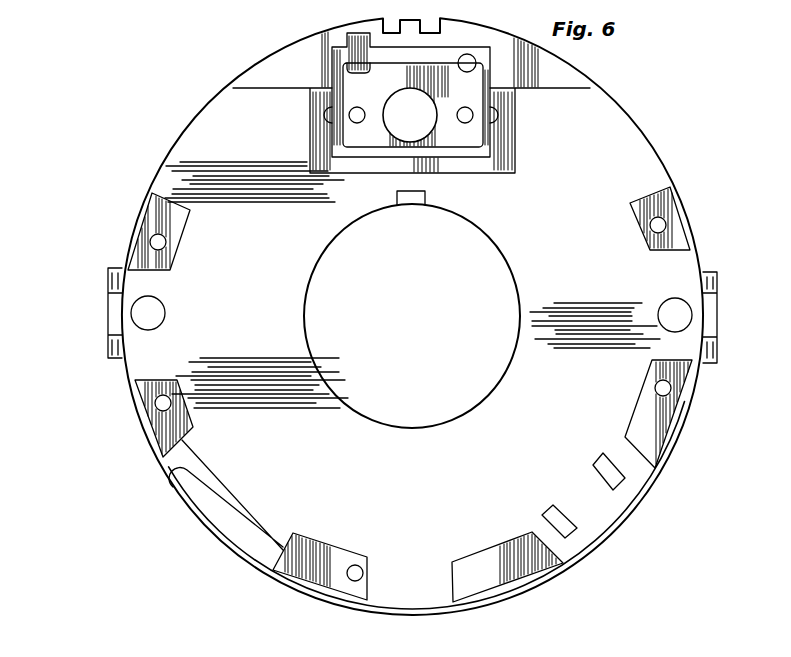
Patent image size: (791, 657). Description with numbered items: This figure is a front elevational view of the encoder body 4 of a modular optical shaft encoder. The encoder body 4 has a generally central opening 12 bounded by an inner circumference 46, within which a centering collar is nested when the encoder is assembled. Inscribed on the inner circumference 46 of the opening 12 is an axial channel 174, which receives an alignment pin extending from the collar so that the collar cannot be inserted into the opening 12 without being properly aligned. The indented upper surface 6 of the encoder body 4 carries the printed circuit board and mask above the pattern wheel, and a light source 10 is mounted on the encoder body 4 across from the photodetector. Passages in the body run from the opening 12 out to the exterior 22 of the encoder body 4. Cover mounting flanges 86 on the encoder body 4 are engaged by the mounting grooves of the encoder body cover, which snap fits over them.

The encoder body 4 is at (690, 195).
The upper surface 6 is at (685, 271).
The light source 10 is at (407, 110).
The opening 12 is at (445, 245).
The exterior 22 is at (532, 45).
The inner circumference 46 is at (513, 275).
The cover mounting flanges 86 is at (116, 325).
The axial channel 174 is at (397, 203).